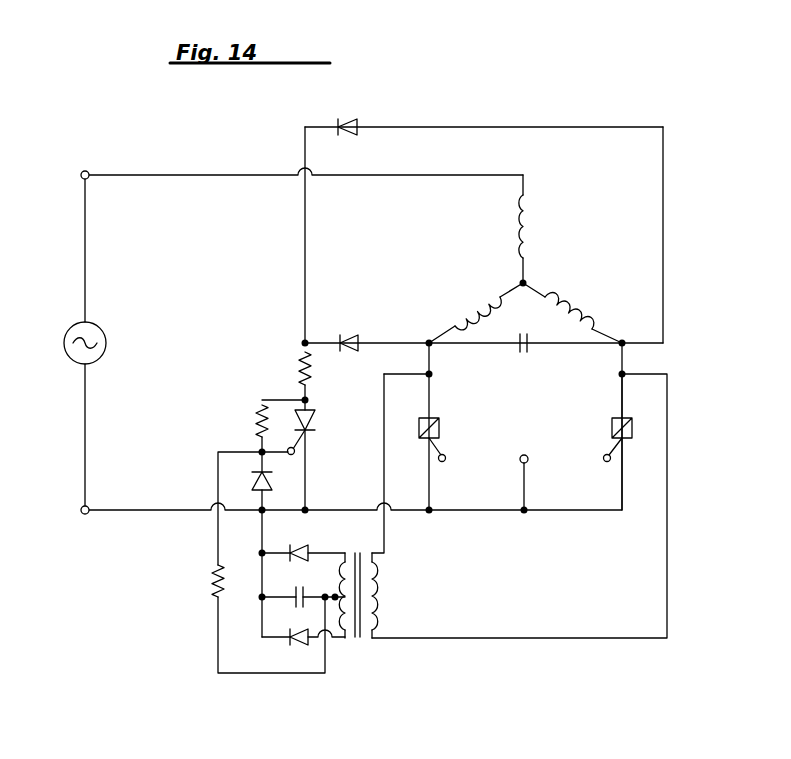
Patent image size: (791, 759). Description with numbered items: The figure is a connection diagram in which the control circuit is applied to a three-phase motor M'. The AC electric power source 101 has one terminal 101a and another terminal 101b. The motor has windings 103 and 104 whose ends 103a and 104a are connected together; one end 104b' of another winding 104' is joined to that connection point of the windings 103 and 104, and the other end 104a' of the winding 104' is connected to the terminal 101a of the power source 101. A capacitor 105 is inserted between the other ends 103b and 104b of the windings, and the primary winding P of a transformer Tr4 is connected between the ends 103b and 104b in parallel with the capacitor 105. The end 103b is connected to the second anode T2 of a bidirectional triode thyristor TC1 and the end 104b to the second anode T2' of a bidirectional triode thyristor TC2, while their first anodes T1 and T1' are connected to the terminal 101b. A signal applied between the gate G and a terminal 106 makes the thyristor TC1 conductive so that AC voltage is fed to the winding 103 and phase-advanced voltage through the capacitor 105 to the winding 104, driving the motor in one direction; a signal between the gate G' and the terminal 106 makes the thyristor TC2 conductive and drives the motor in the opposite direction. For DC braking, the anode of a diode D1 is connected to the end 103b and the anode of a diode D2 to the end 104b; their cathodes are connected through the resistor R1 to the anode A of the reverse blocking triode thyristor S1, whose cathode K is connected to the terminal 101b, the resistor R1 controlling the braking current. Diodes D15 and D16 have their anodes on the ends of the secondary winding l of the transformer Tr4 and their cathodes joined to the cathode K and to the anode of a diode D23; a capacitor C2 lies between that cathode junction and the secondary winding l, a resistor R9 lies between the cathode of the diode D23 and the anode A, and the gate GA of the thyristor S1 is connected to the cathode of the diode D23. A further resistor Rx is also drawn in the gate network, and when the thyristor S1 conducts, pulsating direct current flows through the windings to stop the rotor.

The AC electric power source 101 is at (72, 331).
The terminal of the power source 101a is at (81, 164).
The other terminal of the power source 101b is at (84, 528).
The motor winding 103 is at (475, 301).
The end of winding 103 103a is at (520, 282).
The other end of winding 103 103b is at (429, 341).
The motor winding 104 is at (582, 306).
The another winding 104' is at (494, 226).
The end of winding 104 104a is at (411, 240).
The other end of winding 104' 104a' is at (541, 162).
The other end of winding 104 104b is at (643, 324).
The one end of winding 104' 104b' is at (414, 263).
The capacitor 105 is at (529, 350).
The terminal 106 is at (524, 455).
The three-phase motor M' is at (546, 273).
The diode D1 is at (350, 335).
The diode D2 is at (347, 118).
The resistor R1 is at (286, 368).
The resistor R9 is at (255, 423).
The resistor Rx is at (218, 581).
The reverse blocking triode thyristor S1 is at (316, 420).
The anode of thyristor S1 A is at (321, 398).
The cathode of thyristor S1 K is at (309, 436).
The gate of thyristor S1 GA is at (290, 456).
The diode D23 is at (253, 482).
The bidirectional triode thyristor TC1 is at (440, 428).
The bidirectional triode thyristor TC2 is at (611, 428).
The first anode of thyristor TC1 T1 is at (411, 460).
The second anode of thyristor TC1 T2 is at (450, 404).
The first anode of thyristor TC2 T1' is at (641, 462).
The second anode of thyristor TC2 T2' is at (601, 399).
The gate of thyristor TC1 G is at (446, 461).
The gate of thyristor TC2 G' is at (602, 461).
The diode D15 is at (288, 550).
The diode D16 is at (293, 648).
The capacitor C2 is at (295, 593).
The secondary winding l is at (338, 587).
The primary winding P is at (381, 590).
The transformer Tr4 is at (357, 641).